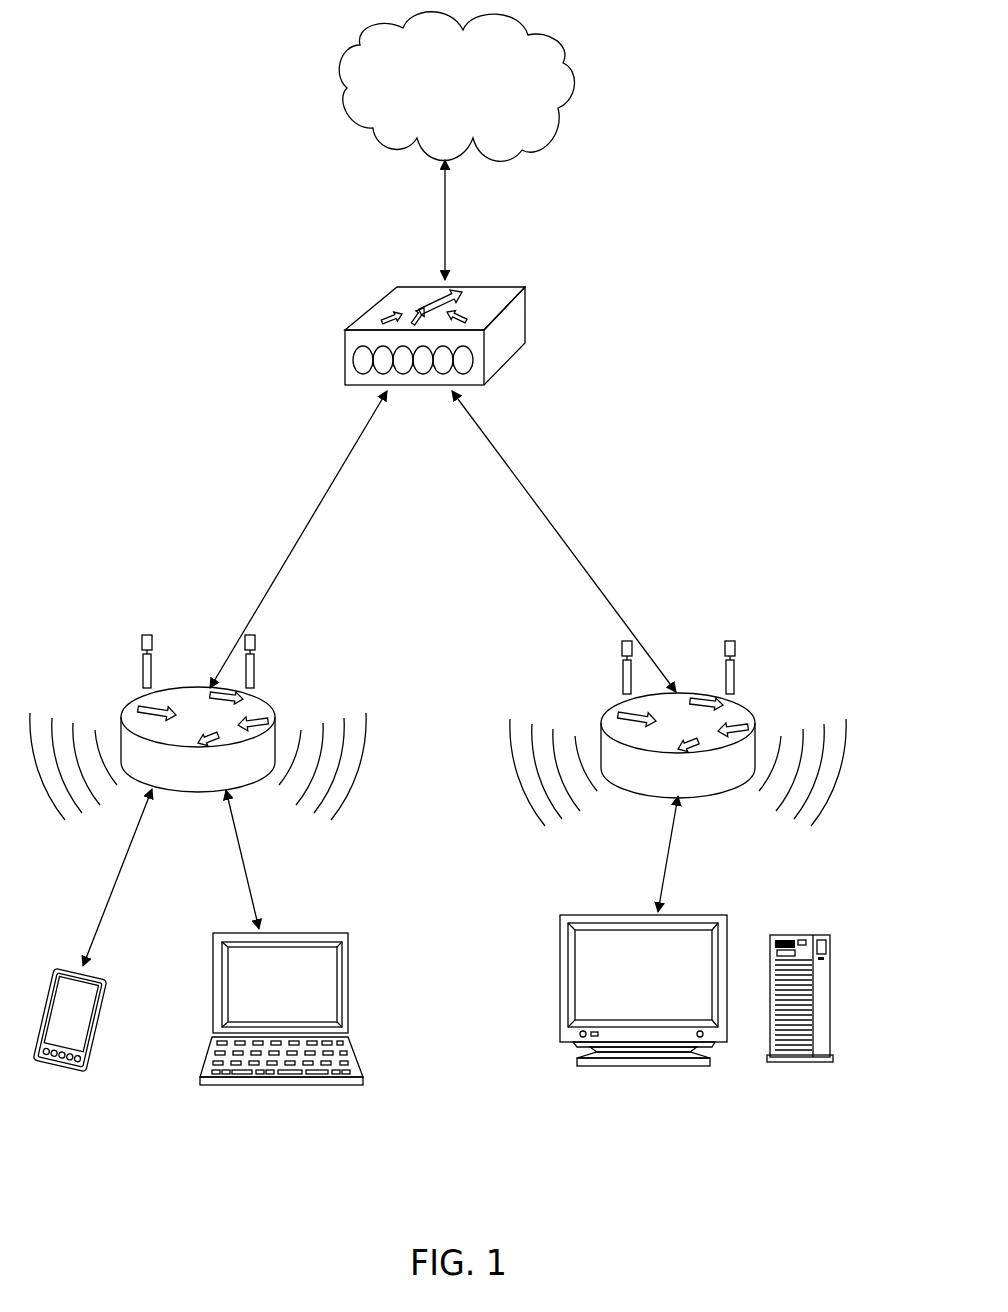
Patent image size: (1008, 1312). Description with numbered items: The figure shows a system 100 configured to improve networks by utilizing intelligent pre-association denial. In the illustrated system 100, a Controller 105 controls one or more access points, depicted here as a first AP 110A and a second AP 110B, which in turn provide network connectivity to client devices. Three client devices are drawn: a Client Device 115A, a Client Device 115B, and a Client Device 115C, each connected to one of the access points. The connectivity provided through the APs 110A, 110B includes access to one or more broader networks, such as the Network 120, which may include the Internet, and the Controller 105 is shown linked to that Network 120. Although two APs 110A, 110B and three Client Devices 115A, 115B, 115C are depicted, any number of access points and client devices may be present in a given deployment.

The system 100 is at (138, 82).
The Network 120 is at (566, 62).
The Controller 105 is at (527, 310).
The AP 110A is at (265, 697).
The AP 110B is at (745, 705).
The Client Device 115A is at (52, 1076).
The Client Device 115B is at (290, 1087).
The Client Device 115C is at (633, 1067).